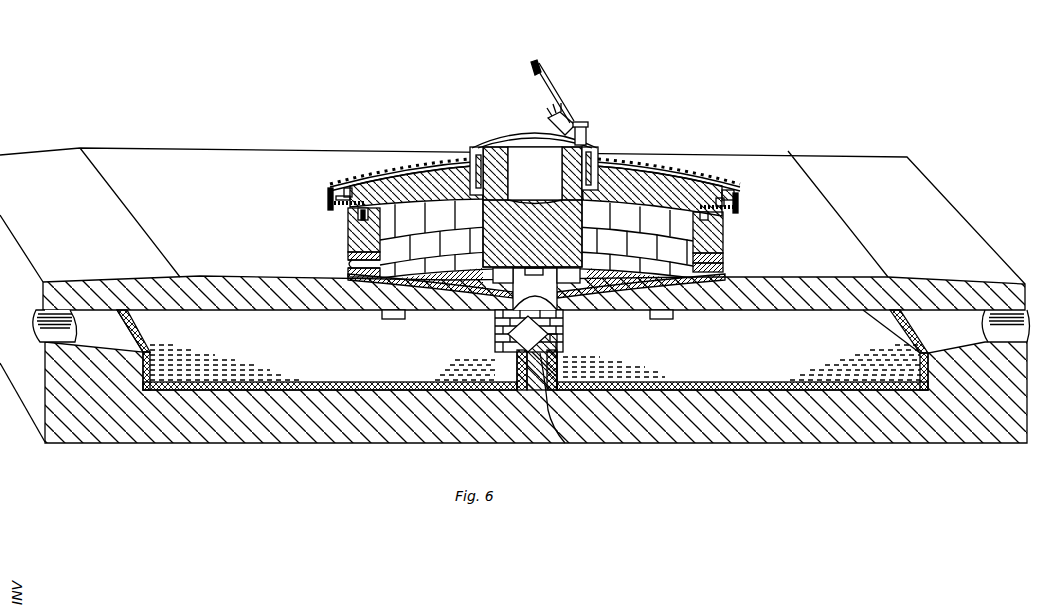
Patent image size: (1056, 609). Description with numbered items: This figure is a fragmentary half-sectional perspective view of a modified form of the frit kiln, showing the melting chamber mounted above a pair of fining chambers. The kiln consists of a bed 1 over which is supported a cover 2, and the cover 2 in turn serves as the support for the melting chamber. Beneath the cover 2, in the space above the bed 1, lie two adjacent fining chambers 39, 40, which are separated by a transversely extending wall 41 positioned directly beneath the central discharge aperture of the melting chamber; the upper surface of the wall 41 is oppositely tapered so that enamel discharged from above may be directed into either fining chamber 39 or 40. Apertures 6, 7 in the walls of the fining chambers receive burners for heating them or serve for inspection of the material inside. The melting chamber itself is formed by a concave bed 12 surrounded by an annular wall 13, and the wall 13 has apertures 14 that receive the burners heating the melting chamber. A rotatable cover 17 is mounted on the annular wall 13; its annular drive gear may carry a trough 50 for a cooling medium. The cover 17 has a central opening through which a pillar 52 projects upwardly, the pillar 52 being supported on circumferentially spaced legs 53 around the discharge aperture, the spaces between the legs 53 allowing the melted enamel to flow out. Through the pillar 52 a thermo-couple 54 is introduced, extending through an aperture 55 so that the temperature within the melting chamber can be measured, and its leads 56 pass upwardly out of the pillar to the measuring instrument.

The bed 1 is at (760, 432).
The cover 2 is at (812, 285).
The aperture 6 is at (388, 321).
The aperture 7 is at (65, 330).
The concave bed 12 is at (536, 249).
The annular wall 13 is at (725, 230).
The apertures 14 is at (357, 263).
The cover 17 is at (672, 168).
The fining chamber 39 is at (742, 350).
The fining chamber 40 is at (317, 350).
The transversely extending wall 41 is at (564, 408).
The trough 50 is at (740, 192).
The pillar 52 is at (537, 147).
The legs 53 is at (493, 273).
The thermo-couple 54 is at (553, 144).
The aperture 55 is at (500, 202).
The leads 56 is at (540, 75).